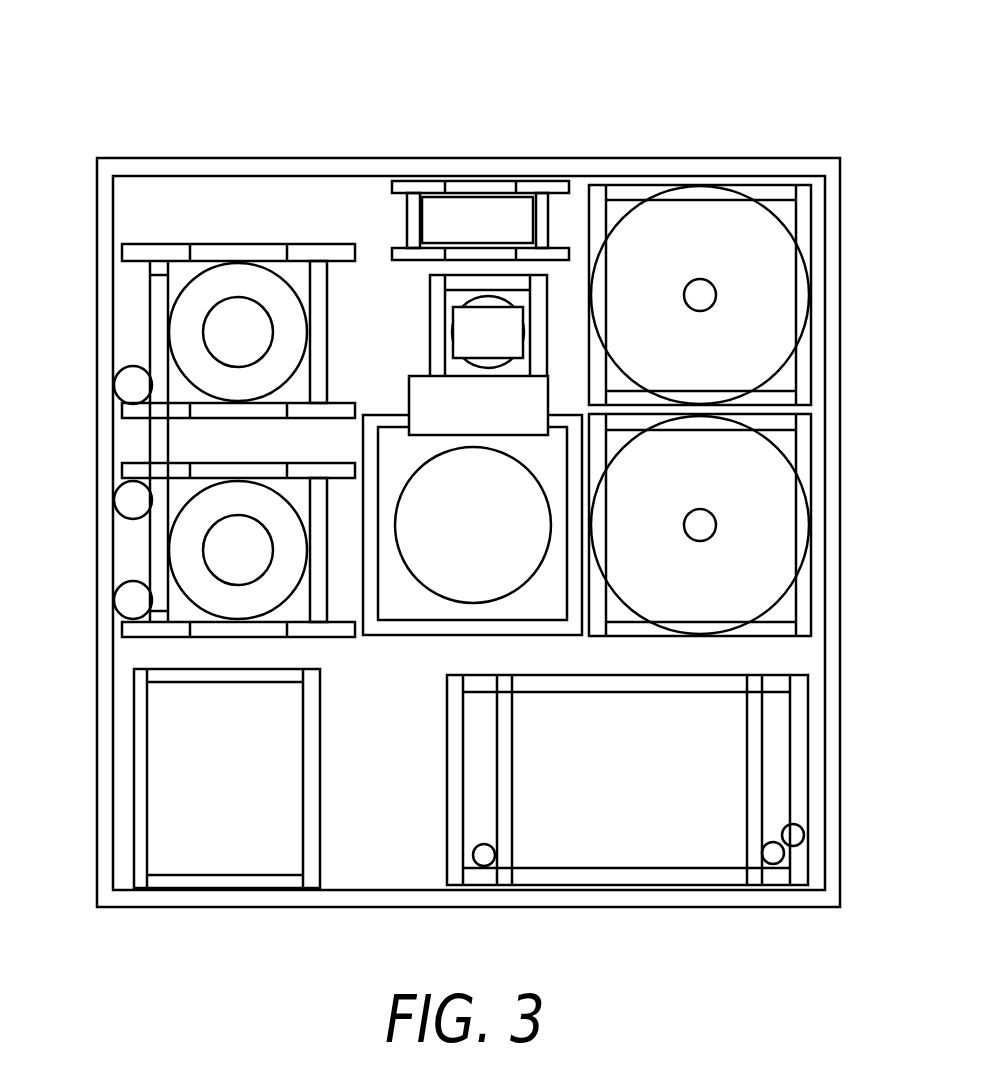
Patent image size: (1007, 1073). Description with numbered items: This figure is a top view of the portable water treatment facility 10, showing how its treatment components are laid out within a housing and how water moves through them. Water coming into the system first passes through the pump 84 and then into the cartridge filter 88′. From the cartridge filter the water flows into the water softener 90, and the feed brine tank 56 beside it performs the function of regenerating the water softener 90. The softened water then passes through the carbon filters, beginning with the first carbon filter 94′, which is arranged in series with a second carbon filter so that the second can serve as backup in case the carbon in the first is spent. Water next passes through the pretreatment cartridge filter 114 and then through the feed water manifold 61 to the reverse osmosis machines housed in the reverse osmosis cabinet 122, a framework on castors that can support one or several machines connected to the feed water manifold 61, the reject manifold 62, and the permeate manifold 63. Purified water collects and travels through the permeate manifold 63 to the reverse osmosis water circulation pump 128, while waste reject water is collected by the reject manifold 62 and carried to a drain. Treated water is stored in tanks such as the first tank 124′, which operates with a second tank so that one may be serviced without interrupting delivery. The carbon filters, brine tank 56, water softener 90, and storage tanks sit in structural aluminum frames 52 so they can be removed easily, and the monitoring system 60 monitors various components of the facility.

The portable water treatment facility 10 is at (138, 69).
The structural aluminum frame 52 is at (200, 246).
The brine tank 56 is at (480, 535).
The monitoring system 60 is at (252, 789).
The feed water manifold 61 is at (778, 858).
The reject manifold 62 is at (807, 832).
The permeate manifold 63 is at (484, 863).
The pump 84 is at (491, 411).
The cartridge filter 88′ is at (130, 383).
The water softener 90 is at (505, 344).
The first carbon filter 94′ is at (228, 285).
The pretreatment cartridge filter 114 is at (127, 607).
The reverse osmosis cabinet 122 is at (597, 760).
The first tank 124′ is at (722, 365).
The reverse osmosis water circulation pump 128 is at (463, 207).